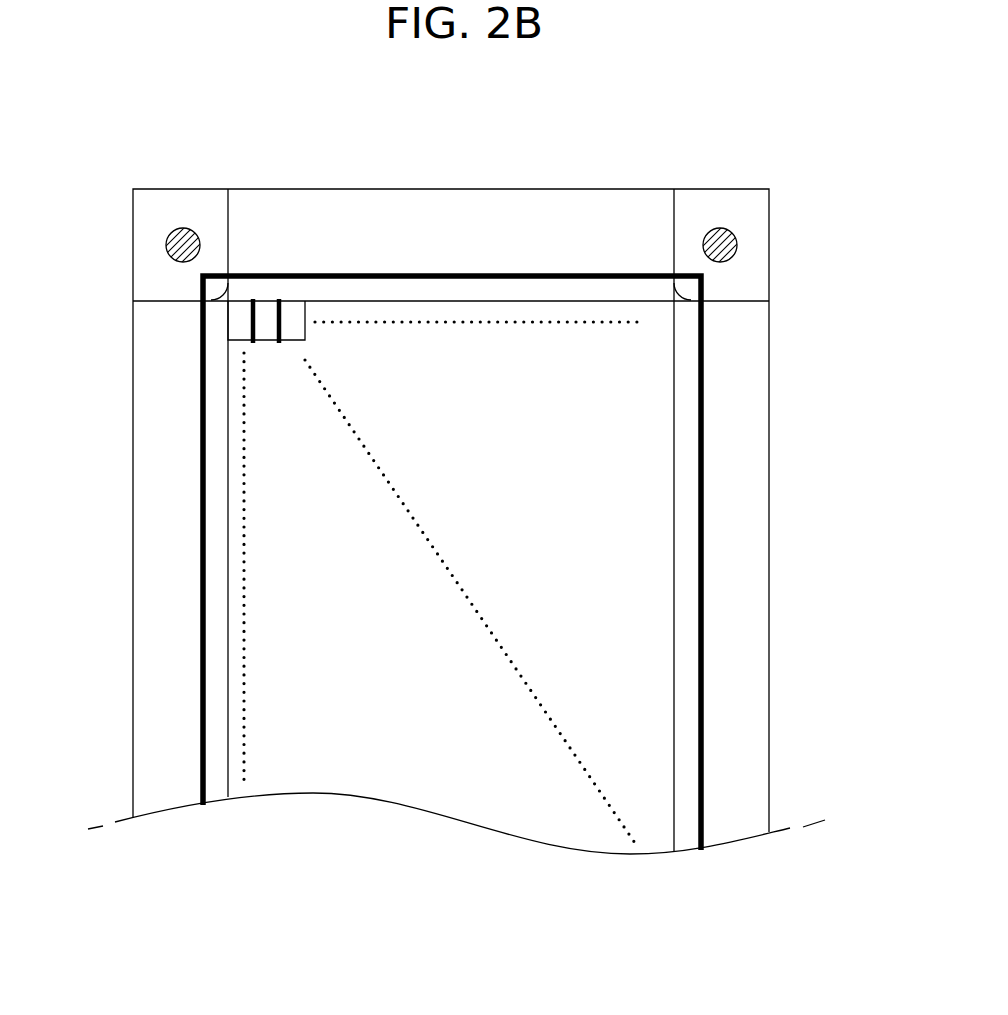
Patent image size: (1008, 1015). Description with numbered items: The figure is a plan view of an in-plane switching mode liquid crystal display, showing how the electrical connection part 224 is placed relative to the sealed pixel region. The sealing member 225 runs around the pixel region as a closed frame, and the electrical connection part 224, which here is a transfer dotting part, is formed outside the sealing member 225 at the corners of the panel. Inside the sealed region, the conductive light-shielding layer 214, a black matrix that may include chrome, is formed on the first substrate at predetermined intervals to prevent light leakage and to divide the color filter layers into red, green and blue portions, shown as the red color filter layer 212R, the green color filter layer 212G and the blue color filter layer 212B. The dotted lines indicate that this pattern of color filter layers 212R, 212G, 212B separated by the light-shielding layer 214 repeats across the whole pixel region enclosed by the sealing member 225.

The red color filter layer 212R is at (241, 306).
The green color filter layer 212G is at (267, 309).
The blue color filter layer 212B is at (293, 309).
The conductive light-shielding layer 214 is at (251, 324).
The electrical connection part 224 is at (737, 245).
The sealing member 225 is at (705, 565).